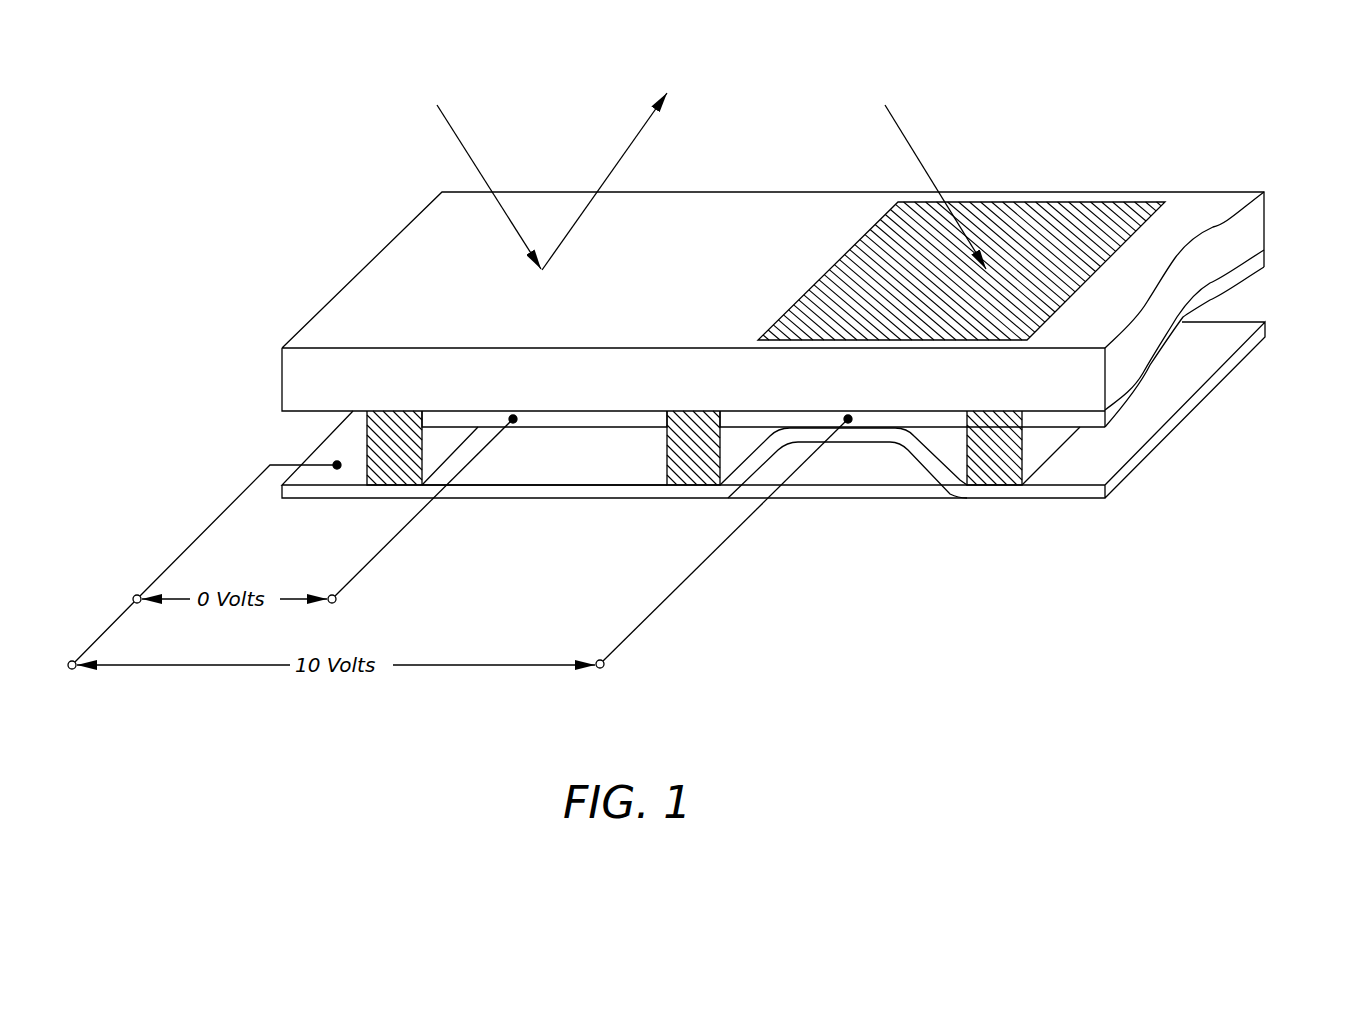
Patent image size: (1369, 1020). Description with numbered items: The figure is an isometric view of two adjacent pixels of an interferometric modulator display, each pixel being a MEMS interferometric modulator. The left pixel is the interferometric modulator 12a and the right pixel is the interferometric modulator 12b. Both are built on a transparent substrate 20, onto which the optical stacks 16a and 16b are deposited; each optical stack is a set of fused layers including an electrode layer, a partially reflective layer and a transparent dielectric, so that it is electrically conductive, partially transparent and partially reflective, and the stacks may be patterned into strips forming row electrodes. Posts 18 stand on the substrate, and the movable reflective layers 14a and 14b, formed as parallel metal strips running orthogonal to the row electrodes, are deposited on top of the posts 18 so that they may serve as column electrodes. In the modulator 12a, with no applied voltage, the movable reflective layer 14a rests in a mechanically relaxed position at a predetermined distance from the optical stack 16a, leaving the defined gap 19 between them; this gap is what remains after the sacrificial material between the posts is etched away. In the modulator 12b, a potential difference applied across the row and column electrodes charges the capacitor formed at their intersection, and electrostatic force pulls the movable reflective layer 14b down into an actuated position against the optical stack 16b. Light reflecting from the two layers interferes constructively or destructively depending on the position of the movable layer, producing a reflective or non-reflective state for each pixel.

The interferometric modulator 12a is at (437, 265).
The interferometric modulator 12b is at (1027, 230).
The movable reflective layer 14a is at (463, 488).
The movable reflective layer 14b is at (760, 458).
The optical stack 16a is at (587, 418).
The optical stack 16b is at (802, 418).
The posts 18 is at (393, 465).
The gap 19 is at (555, 445).
The transparent substrate 20 is at (1225, 248).